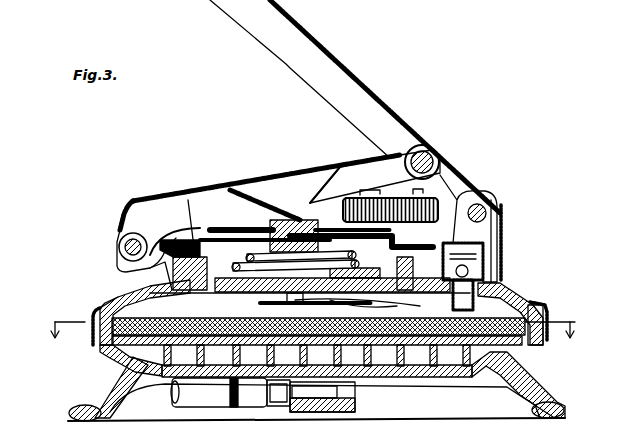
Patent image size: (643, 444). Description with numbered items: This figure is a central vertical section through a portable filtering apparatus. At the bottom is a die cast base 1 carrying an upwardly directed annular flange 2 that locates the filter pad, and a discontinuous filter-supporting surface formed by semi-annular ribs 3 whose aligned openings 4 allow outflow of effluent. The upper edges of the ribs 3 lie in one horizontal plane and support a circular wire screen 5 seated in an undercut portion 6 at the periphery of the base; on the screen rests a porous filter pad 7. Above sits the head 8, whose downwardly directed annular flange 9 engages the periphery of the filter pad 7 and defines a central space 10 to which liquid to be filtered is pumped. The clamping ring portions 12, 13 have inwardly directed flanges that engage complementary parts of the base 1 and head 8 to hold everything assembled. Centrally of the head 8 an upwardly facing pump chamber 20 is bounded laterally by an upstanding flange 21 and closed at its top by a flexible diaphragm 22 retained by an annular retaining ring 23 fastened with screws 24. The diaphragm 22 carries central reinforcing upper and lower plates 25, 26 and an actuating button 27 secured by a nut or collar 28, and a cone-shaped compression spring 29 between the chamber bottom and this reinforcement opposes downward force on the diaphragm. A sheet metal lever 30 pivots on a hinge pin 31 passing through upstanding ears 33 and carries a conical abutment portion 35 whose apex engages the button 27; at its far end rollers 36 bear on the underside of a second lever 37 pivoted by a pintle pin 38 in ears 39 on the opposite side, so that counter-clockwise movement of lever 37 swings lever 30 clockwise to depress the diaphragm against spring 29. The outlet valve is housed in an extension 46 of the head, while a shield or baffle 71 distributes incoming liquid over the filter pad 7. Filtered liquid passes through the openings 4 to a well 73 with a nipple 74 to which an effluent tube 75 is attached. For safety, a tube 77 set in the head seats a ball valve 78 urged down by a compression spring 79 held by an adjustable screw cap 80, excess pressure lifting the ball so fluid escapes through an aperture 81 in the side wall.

The base 1 is at (490, 387).
The annular flange 2 is at (548, 312).
The semi-annular ribs 3 is at (197, 350).
The aligned openings 4 is at (307, 336).
The wire screen 5 is at (133, 358).
The undercut portion 6 is at (523, 347).
The filter pad 7 is at (503, 292).
The head 8 is at (140, 287).
The annular flange 9 is at (114, 302).
The central space 10 is at (318, 319).
The semi-circular portion 12 is at (537, 304).
The semi-circular portion 13 is at (92, 313).
The pump chamber 20 is at (198, 238).
The upstanding flange 21 is at (193, 255).
The flexible diaphragm 22 is at (232, 230).
The annular retaining ring 23 is at (128, 235).
The screws 24 is at (172, 240).
The upper plate 25 is at (240, 226).
The lower plate 26 is at (270, 222).
The central actuating button 27 is at (352, 203).
The nut or collar 28 is at (338, 222).
The compression spring 29 is at (297, 303).
The lever 30 is at (293, 168).
The hinge pin 31 is at (120, 248).
The upstanding ears 33 is at (115, 262).
The rigid abutment portion 35 is at (318, 163).
The rollers 36 is at (410, 145).
The lever 37 is at (345, 58).
The pintle pin 38 is at (493, 198).
The upstanding ears 39 is at (492, 238).
The outlet valve extension 46 is at (424, 228).
The shield or baffle 71 is at (367, 303).
The well 73 is at (337, 410).
The nipple 74 is at (263, 407).
The effluent tube 75 is at (187, 400).
The tube 77 is at (475, 298).
The ball valve 78 is at (478, 253).
The compression spring 79 is at (500, 212).
The screw cap 80 is at (480, 204).
The aperture 81 is at (482, 265).